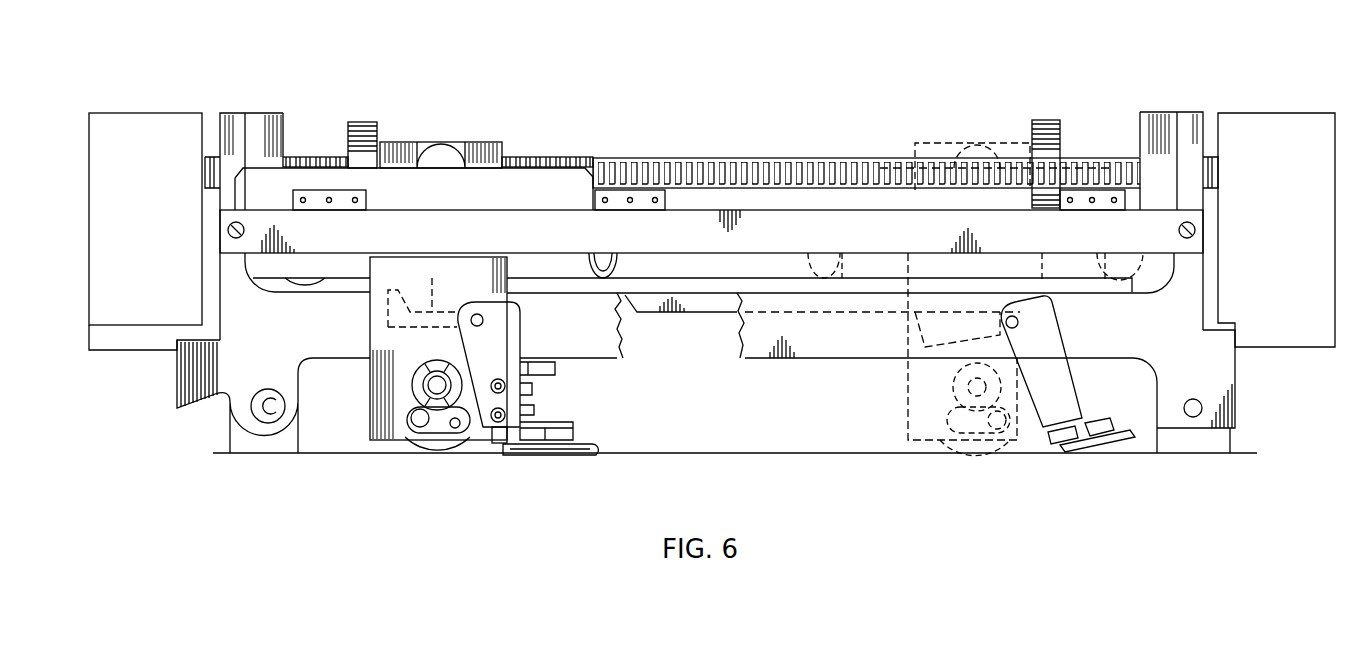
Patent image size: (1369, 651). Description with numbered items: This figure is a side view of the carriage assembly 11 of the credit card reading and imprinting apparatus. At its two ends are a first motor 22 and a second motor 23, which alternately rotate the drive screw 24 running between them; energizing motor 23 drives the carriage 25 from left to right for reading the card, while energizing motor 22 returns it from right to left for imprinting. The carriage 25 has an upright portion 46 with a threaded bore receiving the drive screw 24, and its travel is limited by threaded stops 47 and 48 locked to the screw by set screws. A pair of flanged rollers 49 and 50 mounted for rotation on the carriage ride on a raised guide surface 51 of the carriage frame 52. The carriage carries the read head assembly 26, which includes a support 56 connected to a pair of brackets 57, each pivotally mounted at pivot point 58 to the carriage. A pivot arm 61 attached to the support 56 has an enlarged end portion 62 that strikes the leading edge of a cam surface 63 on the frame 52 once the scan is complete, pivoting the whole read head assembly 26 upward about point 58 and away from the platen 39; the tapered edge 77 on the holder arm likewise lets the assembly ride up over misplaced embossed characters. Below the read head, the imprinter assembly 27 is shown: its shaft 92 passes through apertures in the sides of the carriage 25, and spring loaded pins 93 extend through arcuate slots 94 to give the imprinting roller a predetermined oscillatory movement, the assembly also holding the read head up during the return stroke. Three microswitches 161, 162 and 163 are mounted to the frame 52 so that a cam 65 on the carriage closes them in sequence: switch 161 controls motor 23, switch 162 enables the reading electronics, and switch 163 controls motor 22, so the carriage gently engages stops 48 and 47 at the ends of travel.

The carriage assembly 11 is at (812, 138).
The first motor 22 is at (141, 124).
The second motor 23 is at (1257, 121).
The drive screw 24 is at (737, 158).
The carriage 25 is at (393, 387).
The read head assembly 26 is at (554, 458).
The imprinter assembly 27 is at (443, 457).
The platen 39 is at (802, 453).
The upright portion 46 is at (430, 142).
The threaded stop 47 is at (360, 127).
The threaded stop 48 is at (1042, 123).
The flanged roller 49 is at (313, 282).
The flanged roller 50 is at (607, 260).
The raised guide surface 51 is at (783, 277).
The carriage frame 52 is at (1225, 368).
The support 56 is at (502, 430).
The bracket 57 is at (508, 342).
The pivot point 58 is at (476, 314).
The pivot arm 61 is at (435, 284).
The enlarged end portion 62 is at (393, 290).
The cam surface 63 is at (725, 303).
The cam 65 is at (537, 183).
The tapered edge 77 is at (600, 450).
The shaft 92 is at (438, 378).
The pin 93 is at (420, 415).
The arcuate slot 94 is at (457, 425).
The microswitch 161 is at (343, 202).
The microswitch 162 is at (643, 203).
The microswitch 163 is at (1108, 203).